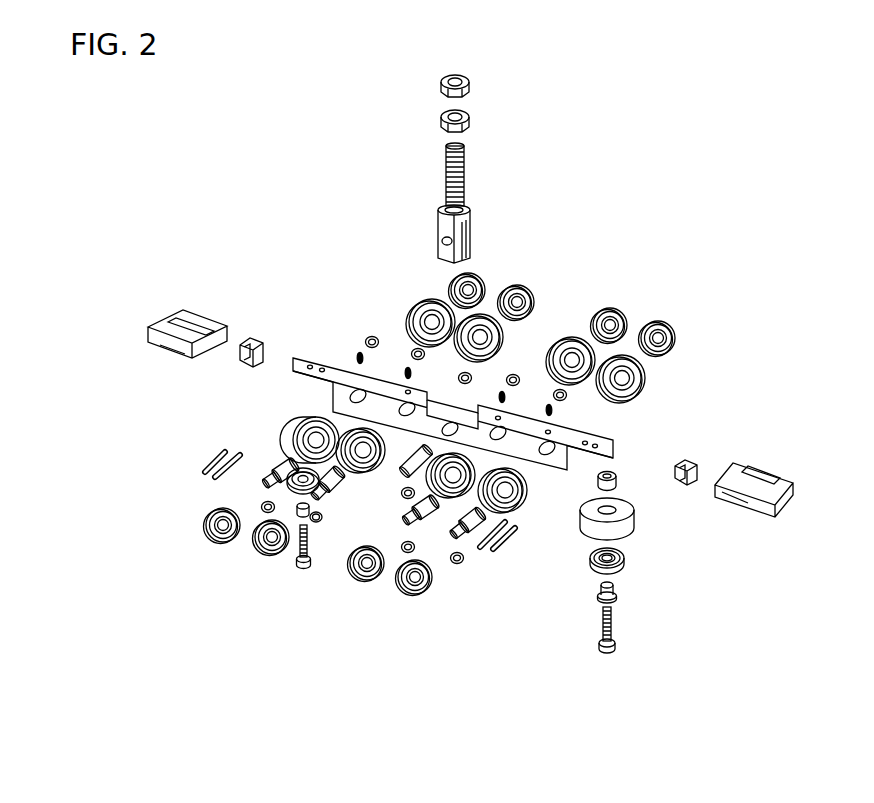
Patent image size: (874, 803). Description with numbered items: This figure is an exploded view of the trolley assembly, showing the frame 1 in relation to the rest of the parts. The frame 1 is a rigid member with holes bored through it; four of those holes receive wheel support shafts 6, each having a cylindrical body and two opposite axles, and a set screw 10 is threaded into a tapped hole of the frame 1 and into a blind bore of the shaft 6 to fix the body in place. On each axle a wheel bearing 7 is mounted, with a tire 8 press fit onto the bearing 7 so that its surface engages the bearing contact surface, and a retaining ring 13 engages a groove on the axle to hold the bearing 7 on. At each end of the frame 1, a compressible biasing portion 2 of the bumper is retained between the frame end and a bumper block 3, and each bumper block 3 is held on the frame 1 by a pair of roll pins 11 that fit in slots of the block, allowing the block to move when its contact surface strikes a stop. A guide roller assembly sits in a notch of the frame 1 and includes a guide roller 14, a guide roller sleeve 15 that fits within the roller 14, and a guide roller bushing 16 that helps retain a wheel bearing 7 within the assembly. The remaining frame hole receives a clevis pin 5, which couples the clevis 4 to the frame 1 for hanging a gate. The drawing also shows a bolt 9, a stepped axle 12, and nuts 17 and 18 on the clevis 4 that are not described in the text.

The frame 1 is at (290, 369).
The biasing portion 2 is at (234, 362).
The bumper block 3 is at (778, 468).
The clevis 4 is at (472, 203).
The clevis pin 5 is at (400, 481).
The wheel support shaft 6 is at (262, 487).
The wheel bearing 7 is at (543, 297).
The tire 8 is at (521, 520).
The bolt 9 is at (614, 651).
The set screw 10 is at (350, 354).
The roll pin 11 is at (496, 555).
The stepped axle 12 is at (403, 506).
The retaining ring 13 is at (456, 567).
The guide roller 14 is at (638, 523).
The guide roller sleeve 15 is at (618, 473).
The guide roller bushing 16 is at (619, 602).
The lock nut 17 is at (434, 110).
The nut 18 is at (472, 75).